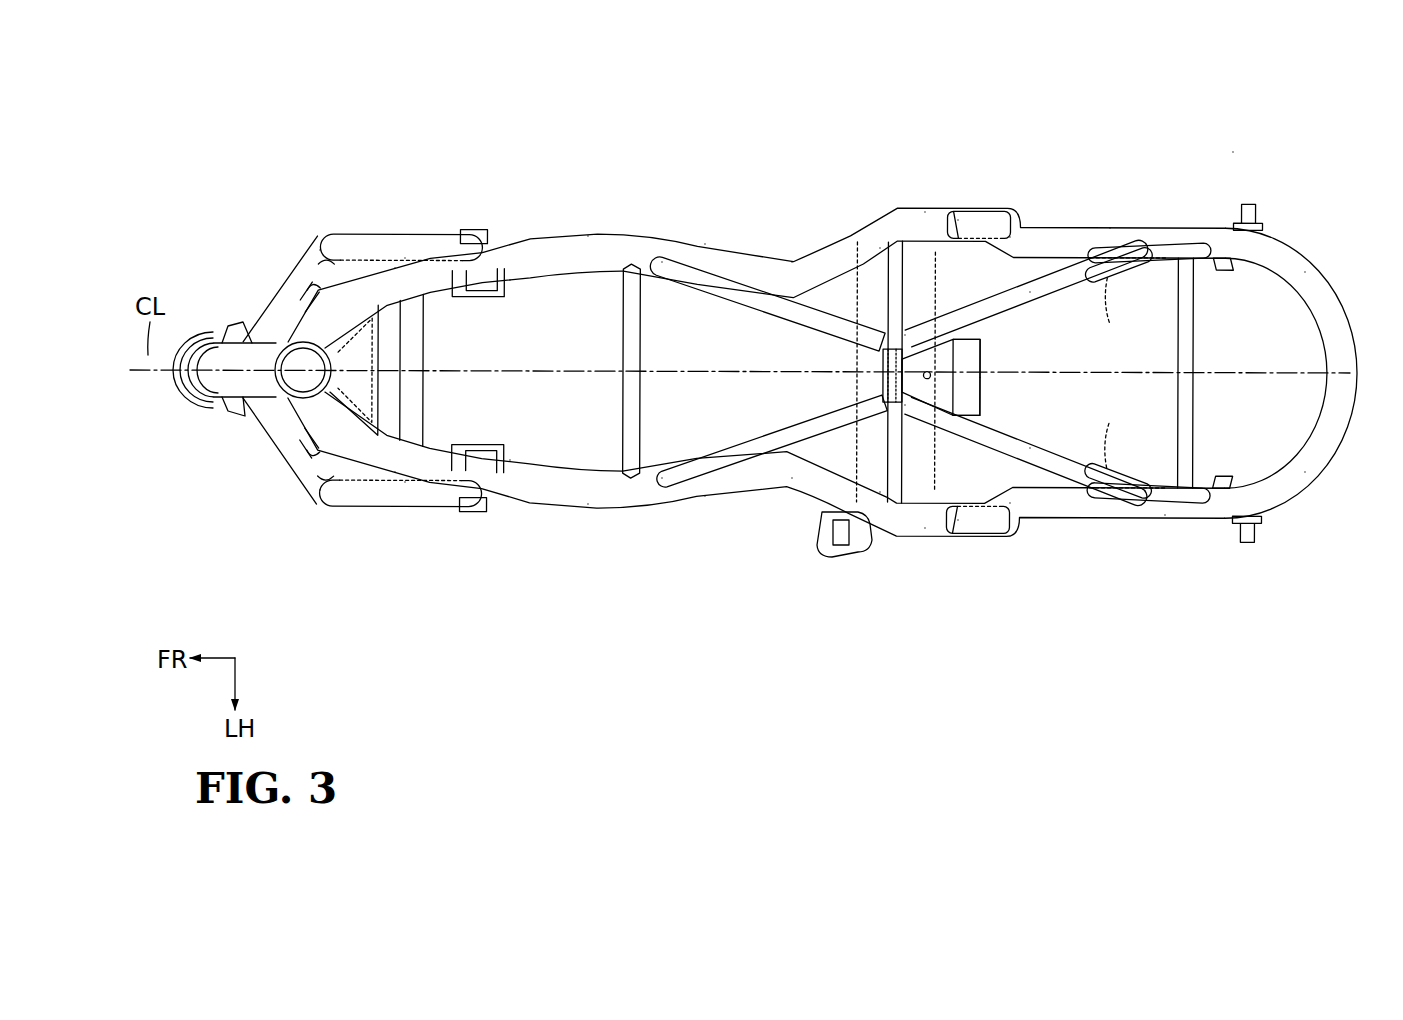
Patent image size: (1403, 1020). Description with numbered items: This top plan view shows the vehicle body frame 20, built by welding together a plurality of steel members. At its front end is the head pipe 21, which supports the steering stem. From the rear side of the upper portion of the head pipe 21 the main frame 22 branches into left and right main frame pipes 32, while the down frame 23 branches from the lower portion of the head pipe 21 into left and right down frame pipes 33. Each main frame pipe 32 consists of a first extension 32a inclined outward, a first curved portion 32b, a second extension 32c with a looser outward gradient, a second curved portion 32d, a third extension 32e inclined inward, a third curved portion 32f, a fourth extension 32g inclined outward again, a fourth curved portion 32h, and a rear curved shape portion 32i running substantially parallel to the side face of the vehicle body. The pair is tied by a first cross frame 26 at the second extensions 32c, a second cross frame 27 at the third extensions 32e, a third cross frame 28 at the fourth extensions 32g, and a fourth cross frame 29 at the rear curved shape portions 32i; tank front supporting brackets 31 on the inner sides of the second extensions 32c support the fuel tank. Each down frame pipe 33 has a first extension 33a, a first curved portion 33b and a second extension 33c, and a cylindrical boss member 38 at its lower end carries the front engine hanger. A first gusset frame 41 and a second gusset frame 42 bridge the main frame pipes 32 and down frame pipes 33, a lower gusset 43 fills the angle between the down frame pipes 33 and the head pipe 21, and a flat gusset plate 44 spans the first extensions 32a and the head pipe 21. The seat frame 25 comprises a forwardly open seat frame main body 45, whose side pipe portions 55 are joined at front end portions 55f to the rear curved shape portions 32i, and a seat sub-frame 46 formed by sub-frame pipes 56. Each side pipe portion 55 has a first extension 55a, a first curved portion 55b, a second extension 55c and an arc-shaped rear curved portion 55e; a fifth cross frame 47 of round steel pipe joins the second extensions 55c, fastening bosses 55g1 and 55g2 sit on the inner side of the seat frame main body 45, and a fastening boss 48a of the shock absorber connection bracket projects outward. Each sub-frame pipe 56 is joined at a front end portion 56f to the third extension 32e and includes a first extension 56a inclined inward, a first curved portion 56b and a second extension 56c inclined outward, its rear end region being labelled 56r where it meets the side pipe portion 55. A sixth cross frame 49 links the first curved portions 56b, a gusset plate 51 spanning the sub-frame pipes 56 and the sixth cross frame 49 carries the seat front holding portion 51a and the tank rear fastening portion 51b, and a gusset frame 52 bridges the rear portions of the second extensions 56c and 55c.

The vehicle body frame 20 is at (677, 115).
The head pipe 21 is at (215, 350).
The main frame 22 is at (756, 368).
The down frame 23 is at (393, 370).
The seat frame 25 is at (1233, 152).
The first cross frame 26 is at (420, 340).
The second cross frame 27 is at (642, 350).
The third cross frame 28 is at (866, 455).
The fourth cross frame 29 is at (936, 470).
The tank front supporting bracket 31 is at (504, 292).
The main frame pipe 32 is at (560, 236).
The first extension 32a is at (323, 335).
The first curved portion 32b is at (392, 262).
The second extension 32c is at (508, 275).
The second curved portion 32d is at (588, 236).
The third extension 32e is at (705, 243).
The third curved portion 32f is at (792, 260).
The fourth extension 32g is at (848, 235).
The fourth curved portion 32h is at (880, 247).
The rear curved shape portion 32i is at (925, 210).
The down frame pipe 33 is at (328, 230).
The first extension 33a is at (298, 322).
The first curved portion 33b is at (321, 248).
The second extension 33c is at (405, 257).
The cylindrical boss member 38 is at (475, 227).
The first gusset frame 41 is at (320, 266).
The second gusset frame 42 is at (310, 284).
The lower gusset 43 is at (228, 412).
The gusset plate 44 is at (378, 400).
The seat frame main body 45 is at (1218, 376).
The seat sub-frame 46 is at (1034, 375).
The fifth cross frame 47 is at (1195, 357).
The fastening boss 48a is at (1257, 208).
The sixth cross frame 49 is at (883, 368).
The gusset plate 51 is at (1045, 420).
The seat front holding portion 51a is at (955, 390).
The tank rear fastening portion 51b is at (955, 352).
The gusset frame 52 is at (1147, 264).
The side pipe portion 55 is at (1080, 226).
The first extension 55a is at (975, 222).
The first curved portion 55b is at (1012, 233).
The second extension 55c is at (1108, 227).
The rear curved portion 55e is at (1305, 275).
The front end portion 55f is at (958, 210).
The fastening boss 55g1 is at (1102, 290).
The fastening boss 55g2 is at (1224, 270).
The sub-frame pipe 56 is at (1052, 262).
The first extension 56a is at (738, 283).
The first curved portion 56b is at (905, 330).
The second extension 56c is at (1030, 288).
The front end portion 56f is at (667, 258).
The sub frame rear end 56r is at (1163, 240).